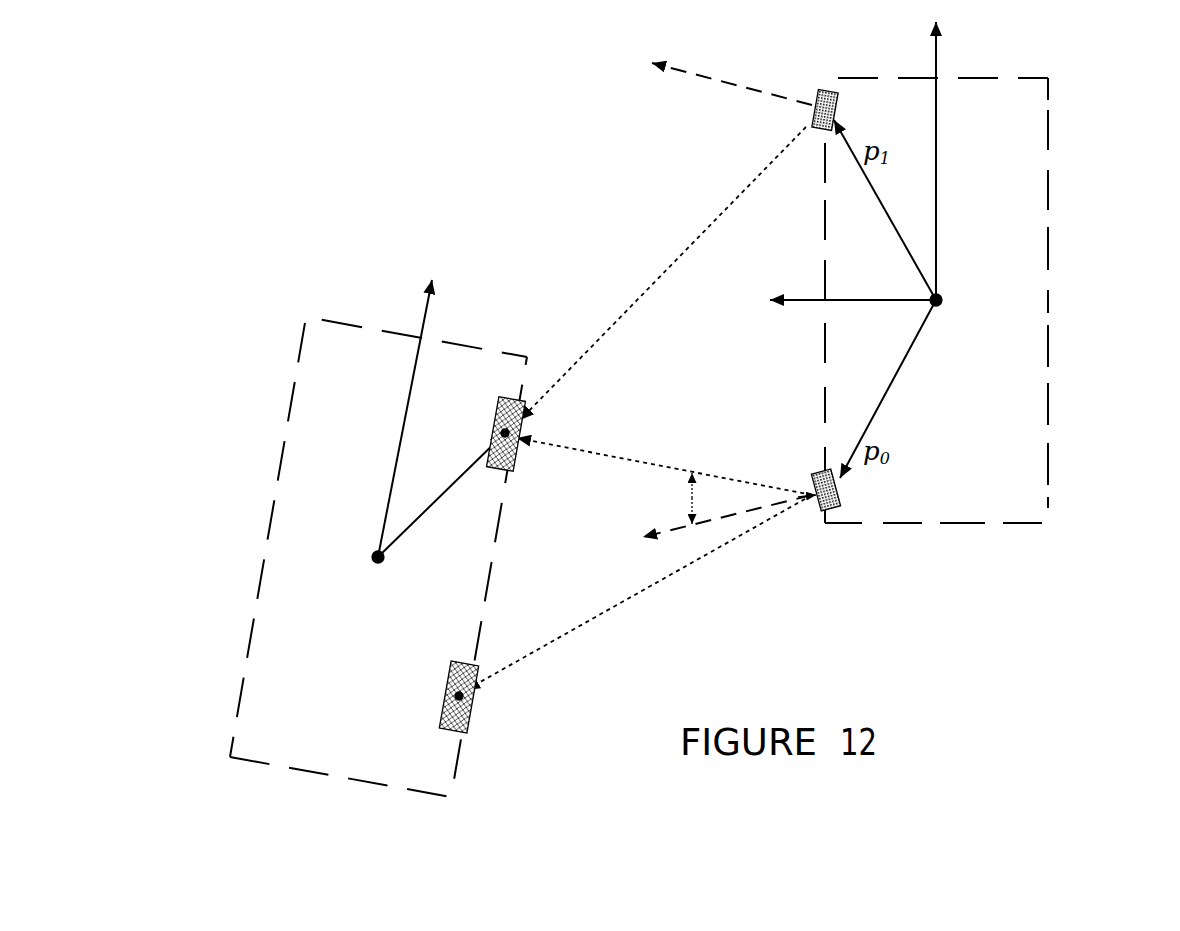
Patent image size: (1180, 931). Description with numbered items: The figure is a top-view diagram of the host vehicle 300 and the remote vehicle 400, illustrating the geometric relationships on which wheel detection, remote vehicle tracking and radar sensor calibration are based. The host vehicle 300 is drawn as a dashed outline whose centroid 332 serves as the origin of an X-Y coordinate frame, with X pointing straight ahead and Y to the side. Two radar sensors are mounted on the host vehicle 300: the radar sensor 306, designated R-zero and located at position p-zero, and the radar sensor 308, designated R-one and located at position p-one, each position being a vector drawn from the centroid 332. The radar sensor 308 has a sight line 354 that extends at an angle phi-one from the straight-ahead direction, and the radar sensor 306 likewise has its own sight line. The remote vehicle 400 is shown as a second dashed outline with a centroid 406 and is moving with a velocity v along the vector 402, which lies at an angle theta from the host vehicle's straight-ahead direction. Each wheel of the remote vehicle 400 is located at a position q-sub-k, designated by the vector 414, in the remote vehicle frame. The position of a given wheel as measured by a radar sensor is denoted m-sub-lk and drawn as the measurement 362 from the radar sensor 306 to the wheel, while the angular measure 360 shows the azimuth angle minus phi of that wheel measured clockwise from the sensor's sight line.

The host vehicle 300 is at (1048, 468).
The radar sensor 306 is at (828, 508).
The radar sensor 308 is at (828, 88).
The centroid 332 is at (947, 300).
The sight line 354 is at (412, 130).
The angular measure 360 is at (682, 498).
The wheel position measurement 362 is at (620, 460).
The remote vehicle 400 is at (333, 775).
The velocity vector 402 is at (400, 437).
The centroid 406 is at (370, 558).
The wheel position vector 414 is at (453, 493).